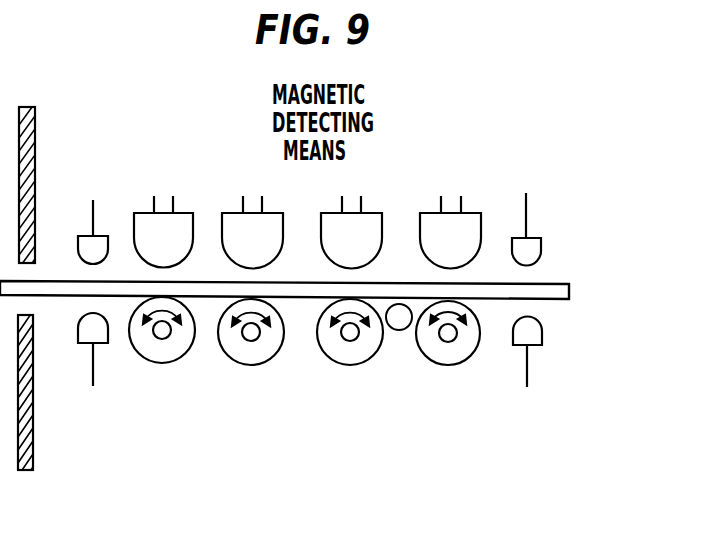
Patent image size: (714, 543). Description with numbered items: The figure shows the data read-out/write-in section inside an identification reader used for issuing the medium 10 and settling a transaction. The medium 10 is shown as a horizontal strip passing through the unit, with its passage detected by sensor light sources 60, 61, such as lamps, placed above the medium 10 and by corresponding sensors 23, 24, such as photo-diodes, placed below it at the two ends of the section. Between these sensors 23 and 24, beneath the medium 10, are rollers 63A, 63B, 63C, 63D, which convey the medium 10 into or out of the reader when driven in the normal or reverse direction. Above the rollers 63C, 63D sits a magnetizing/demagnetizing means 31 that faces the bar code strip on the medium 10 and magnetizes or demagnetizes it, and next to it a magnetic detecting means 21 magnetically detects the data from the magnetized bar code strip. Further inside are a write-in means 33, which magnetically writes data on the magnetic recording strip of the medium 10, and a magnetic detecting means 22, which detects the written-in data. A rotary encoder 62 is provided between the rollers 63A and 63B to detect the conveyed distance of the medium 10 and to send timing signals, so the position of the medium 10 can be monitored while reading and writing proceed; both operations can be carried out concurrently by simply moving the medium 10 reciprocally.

The medium 10 is at (562, 278).
The magnetic detecting means 21 is at (276, 213).
The magnetic detecting means 22 is at (466, 213).
The sensor 23 is at (103, 343).
The sensor 24 is at (537, 345).
The magnetizing/demagnetizing means 31 is at (182, 213).
The write-in means 33 is at (375, 213).
The sensor light source 60 is at (90, 236).
The sensor light source 61 is at (540, 238).
The rotary encoder 62 is at (399, 331).
The roller 63A is at (464, 358).
The roller 63B is at (350, 364).
The roller 63C is at (260, 363).
The roller 63D is at (175, 360).